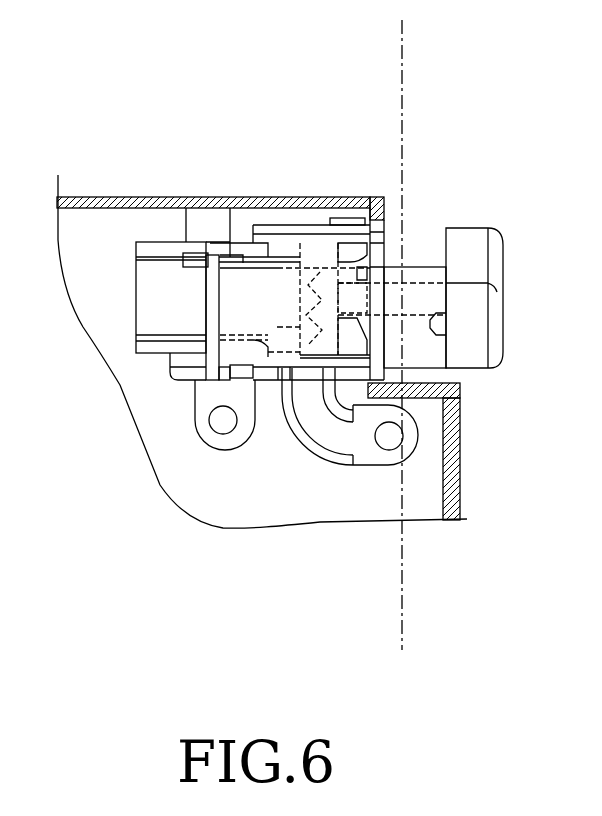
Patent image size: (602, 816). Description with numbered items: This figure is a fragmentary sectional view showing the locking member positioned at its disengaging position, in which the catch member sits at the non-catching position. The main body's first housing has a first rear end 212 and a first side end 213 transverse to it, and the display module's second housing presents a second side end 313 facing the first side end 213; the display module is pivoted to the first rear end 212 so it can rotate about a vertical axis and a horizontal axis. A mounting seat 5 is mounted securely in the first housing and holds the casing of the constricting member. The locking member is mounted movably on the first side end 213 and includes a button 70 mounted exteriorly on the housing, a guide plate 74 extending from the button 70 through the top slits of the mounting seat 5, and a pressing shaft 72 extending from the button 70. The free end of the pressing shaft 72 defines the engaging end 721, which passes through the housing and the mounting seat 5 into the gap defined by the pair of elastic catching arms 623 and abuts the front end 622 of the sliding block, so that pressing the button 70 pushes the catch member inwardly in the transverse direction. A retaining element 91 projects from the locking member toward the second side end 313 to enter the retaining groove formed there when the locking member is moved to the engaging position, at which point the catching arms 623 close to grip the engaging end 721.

The mounting seat 5 is at (240, 228).
The button 70 is at (503, 275).
The pressing shaft 72 is at (416, 295).
The guide plate 74 is at (420, 353).
The retaining element 91 is at (442, 325).
The first rear end 212 is at (262, 199).
The first side end 213 is at (460, 468).
The second side end 313 is at (404, 60).
The front end 622 is at (320, 272).
The elastic catching arms 623 is at (338, 240).
The engaging end 721 is at (340, 352).